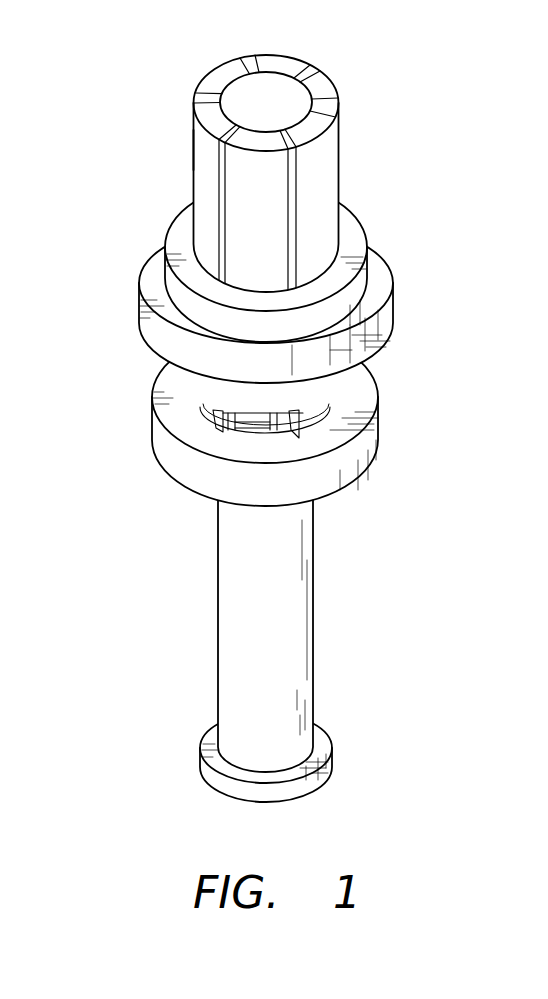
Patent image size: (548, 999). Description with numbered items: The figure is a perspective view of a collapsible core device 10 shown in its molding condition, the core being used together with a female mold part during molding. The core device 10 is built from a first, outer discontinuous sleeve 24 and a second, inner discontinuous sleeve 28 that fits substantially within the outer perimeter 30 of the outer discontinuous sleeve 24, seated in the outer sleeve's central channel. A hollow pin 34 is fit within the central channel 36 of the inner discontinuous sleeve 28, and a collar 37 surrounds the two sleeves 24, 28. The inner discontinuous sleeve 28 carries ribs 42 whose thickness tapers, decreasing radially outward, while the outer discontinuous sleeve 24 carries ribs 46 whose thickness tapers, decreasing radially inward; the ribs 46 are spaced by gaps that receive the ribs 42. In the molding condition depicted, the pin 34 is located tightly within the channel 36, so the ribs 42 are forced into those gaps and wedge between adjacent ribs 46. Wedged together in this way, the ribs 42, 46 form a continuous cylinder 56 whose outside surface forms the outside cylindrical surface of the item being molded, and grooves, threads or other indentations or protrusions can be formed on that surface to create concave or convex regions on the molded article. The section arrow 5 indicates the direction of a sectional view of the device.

The collapsible core device 10 is at (269, 401).
The outer discontinuous sleeve 24 is at (330, 157).
The inner discontinuous sleeve 28 is at (324, 108).
The outer perimeter 30 is at (317, 230).
The hollow pin 34 is at (318, 627).
The central channel 36 is at (230, 131).
The collar 37 is at (393, 346).
The ribs 42 is at (310, 65).
The ribs 46 is at (275, 62).
The continuous cylinder 56 is at (192, 147).
The section arrow 5 is at (408, 352).